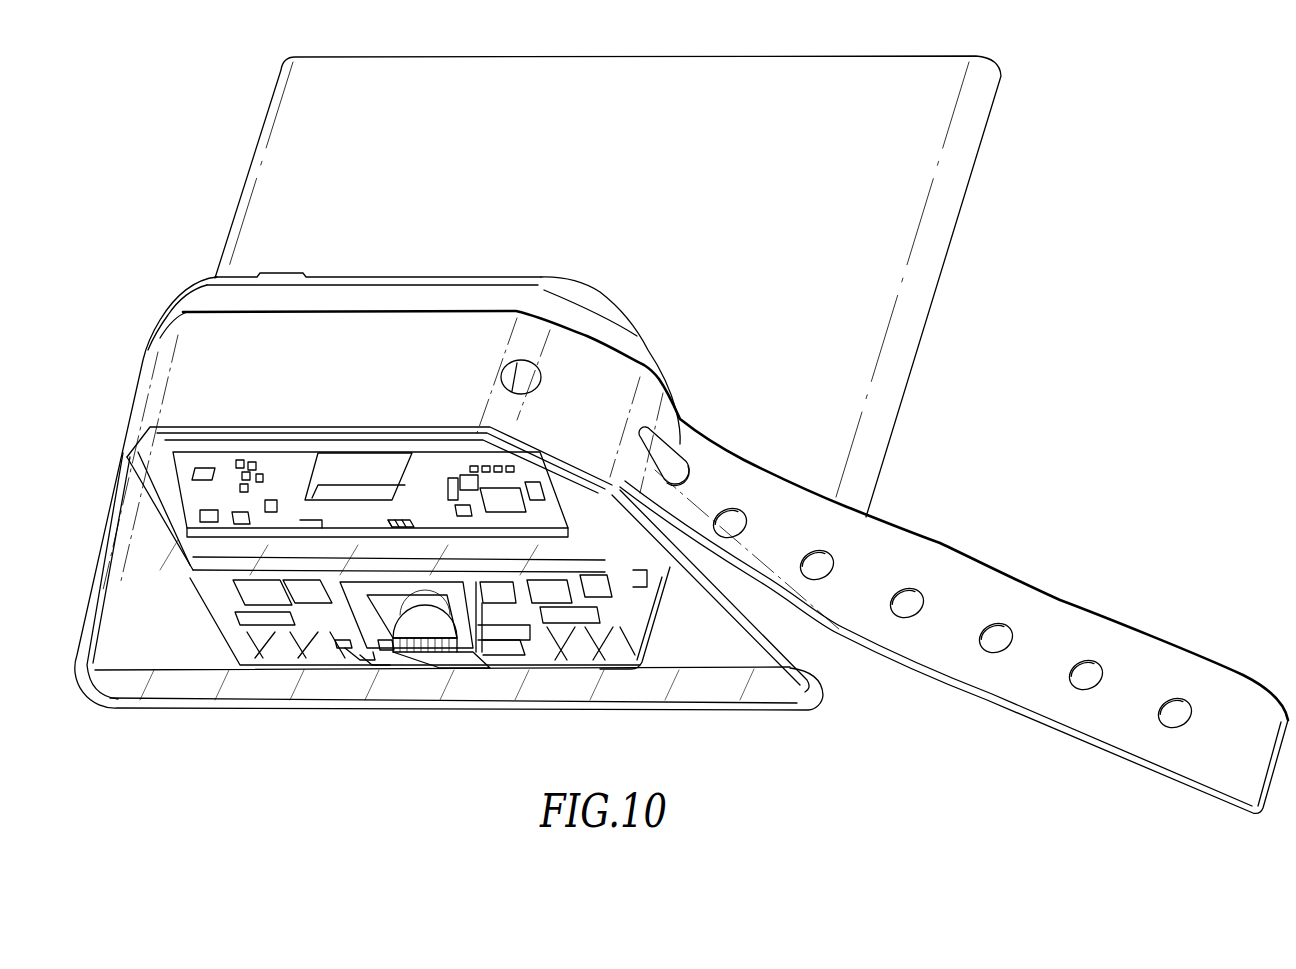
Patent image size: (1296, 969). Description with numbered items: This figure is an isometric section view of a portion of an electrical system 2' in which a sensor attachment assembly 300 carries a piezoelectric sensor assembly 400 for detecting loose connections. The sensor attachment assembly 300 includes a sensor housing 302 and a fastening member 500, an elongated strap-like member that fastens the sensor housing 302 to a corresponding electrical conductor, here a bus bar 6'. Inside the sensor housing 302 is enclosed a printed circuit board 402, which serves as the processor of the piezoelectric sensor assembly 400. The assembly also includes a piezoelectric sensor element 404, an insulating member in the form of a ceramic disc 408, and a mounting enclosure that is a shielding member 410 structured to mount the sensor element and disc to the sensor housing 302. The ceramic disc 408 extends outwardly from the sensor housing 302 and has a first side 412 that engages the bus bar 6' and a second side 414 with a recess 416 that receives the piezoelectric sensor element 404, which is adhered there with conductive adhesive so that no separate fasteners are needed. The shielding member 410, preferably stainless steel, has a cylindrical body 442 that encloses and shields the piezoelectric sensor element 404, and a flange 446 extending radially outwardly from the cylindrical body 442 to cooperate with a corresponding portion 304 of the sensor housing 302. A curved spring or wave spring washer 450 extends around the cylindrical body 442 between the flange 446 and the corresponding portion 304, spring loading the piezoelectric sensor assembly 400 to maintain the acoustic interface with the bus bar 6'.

The electrical system 2' is at (108, 800).
The bus bar 6' is at (612, 286).
The sensor attachment assembly 300 is at (676, 323).
The sensor housing 302 is at (640, 603).
The corresponding portion of the sensor housing 304 is at (362, 663).
The piezoelectric sensor assembly 400 is at (405, 686).
The printed circuit board 402 is at (287, 467).
The piezoelectric sensor element 404 is at (390, 656).
The ceramic disc 408 is at (488, 677).
The shielding member 410 is at (487, 596).
The first side 412 is at (453, 673).
The second side 414 is at (493, 642).
The recess 416 is at (442, 650).
The cylindrical body 442 is at (360, 617).
The flange 446 is at (367, 660).
The wave spring washer 450 is at (337, 643).
The fastening member 500 is at (887, 543).